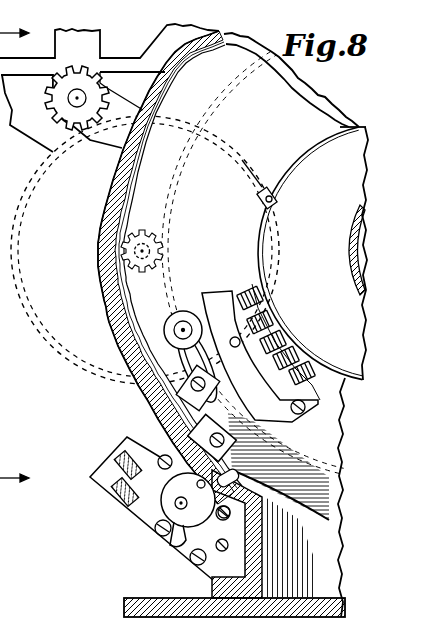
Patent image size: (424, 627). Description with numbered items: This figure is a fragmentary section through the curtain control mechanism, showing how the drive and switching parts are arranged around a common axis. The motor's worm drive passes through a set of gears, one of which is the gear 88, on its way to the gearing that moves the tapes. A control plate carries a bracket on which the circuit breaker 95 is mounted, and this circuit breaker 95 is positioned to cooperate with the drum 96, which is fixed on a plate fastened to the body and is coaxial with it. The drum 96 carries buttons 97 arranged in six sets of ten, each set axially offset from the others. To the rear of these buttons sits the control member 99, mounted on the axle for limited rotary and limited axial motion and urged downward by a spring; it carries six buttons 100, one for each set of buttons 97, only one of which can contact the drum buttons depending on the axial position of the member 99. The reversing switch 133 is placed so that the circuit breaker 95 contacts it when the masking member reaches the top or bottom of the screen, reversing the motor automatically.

The gear 88 is at (84, 344).
The circuit breaker 95 is at (190, 418).
The drum 96 is at (219, 292).
The buttons 97 is at (280, 438).
The control member 99 is at (320, 155).
The buttons 100 is at (265, 198).
The reversing switch 133 is at (140, 522).